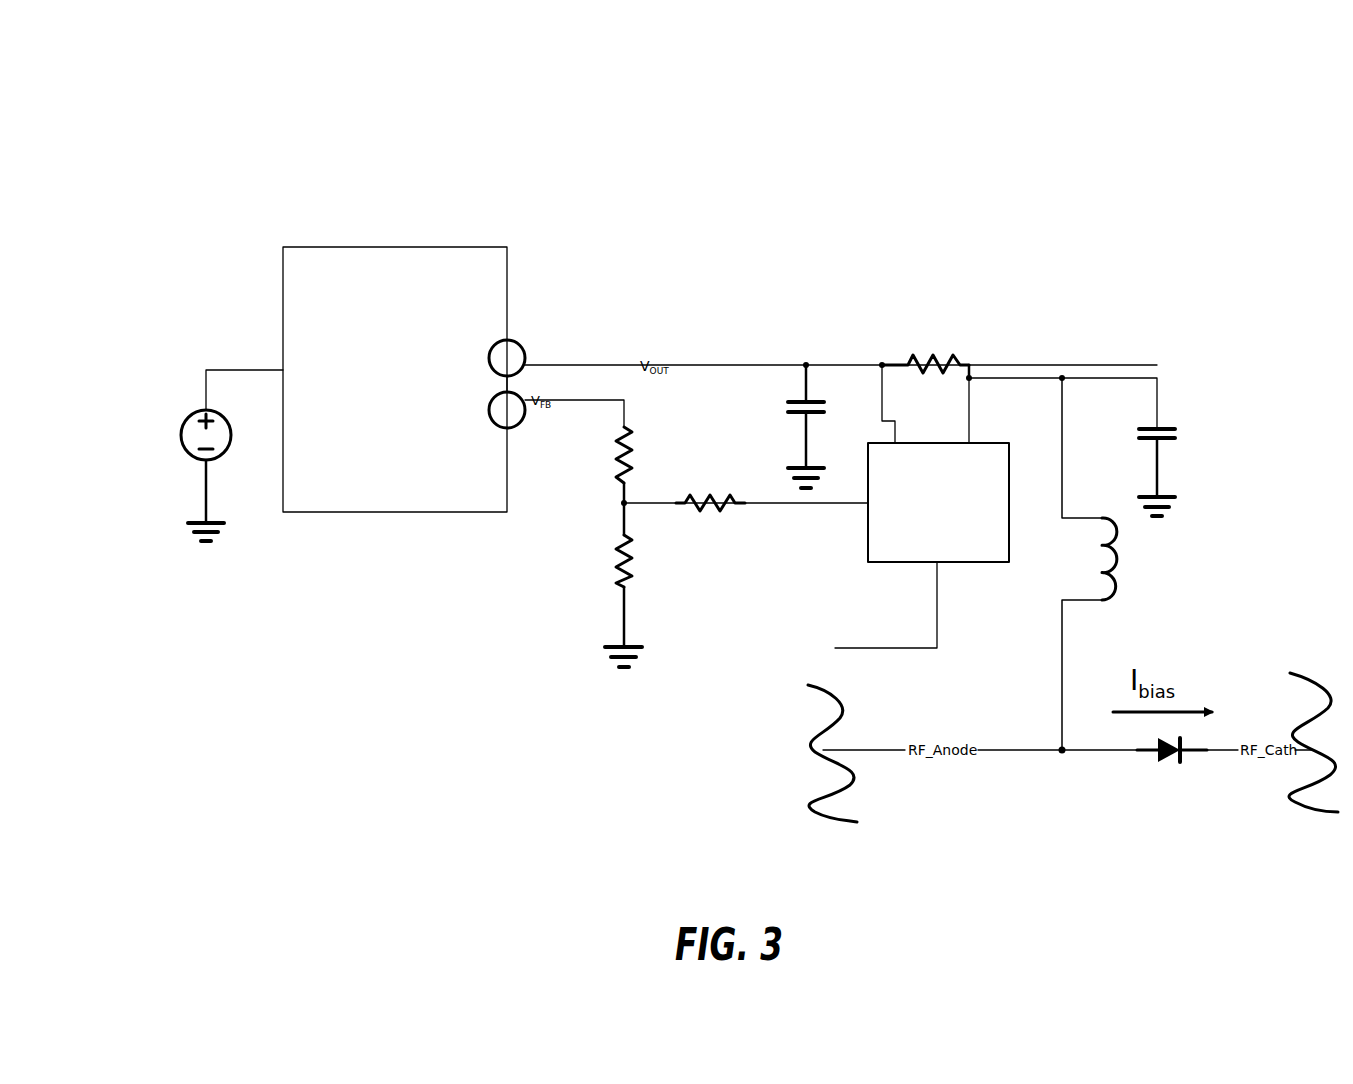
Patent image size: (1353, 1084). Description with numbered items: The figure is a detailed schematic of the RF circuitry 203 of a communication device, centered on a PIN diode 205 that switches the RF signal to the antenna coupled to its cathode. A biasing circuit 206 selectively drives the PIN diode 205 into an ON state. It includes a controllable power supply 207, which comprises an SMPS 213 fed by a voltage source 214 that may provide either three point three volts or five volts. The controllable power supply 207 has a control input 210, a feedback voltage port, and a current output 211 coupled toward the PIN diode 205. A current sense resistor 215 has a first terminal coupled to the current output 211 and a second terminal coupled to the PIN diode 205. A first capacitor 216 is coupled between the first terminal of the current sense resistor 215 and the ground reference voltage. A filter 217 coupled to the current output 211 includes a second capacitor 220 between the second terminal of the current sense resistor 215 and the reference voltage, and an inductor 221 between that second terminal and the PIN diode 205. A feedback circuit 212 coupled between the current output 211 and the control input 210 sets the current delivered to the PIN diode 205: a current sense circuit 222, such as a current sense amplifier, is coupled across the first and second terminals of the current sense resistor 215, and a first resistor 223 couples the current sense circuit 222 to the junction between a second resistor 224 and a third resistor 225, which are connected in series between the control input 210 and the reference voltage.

The RF circuitry 203 is at (1260, 128).
The PIN diode 205 is at (1167, 762).
The biasing circuit 206 is at (889, 188).
The controllable power supply 207 is at (442, 216).
The control input 210 is at (524, 372).
The current output 211 is at (512, 345).
The feedback circuit 212 is at (742, 604).
The SMPS 213 is at (412, 513).
The voltage source 214 is at (217, 438).
The current sense resistor 215 is at (925, 345).
The first capacitor 216 is at (800, 395).
The filter 217 is at (1186, 386).
The second capacitor 220 is at (1168, 440).
The inductor 221 is at (1105, 620).
The current sense circuit 222 is at (973, 440).
The first resistor 223 is at (717, 487).
The second resistor 224 is at (618, 447).
The third resistor 225 is at (617, 573).